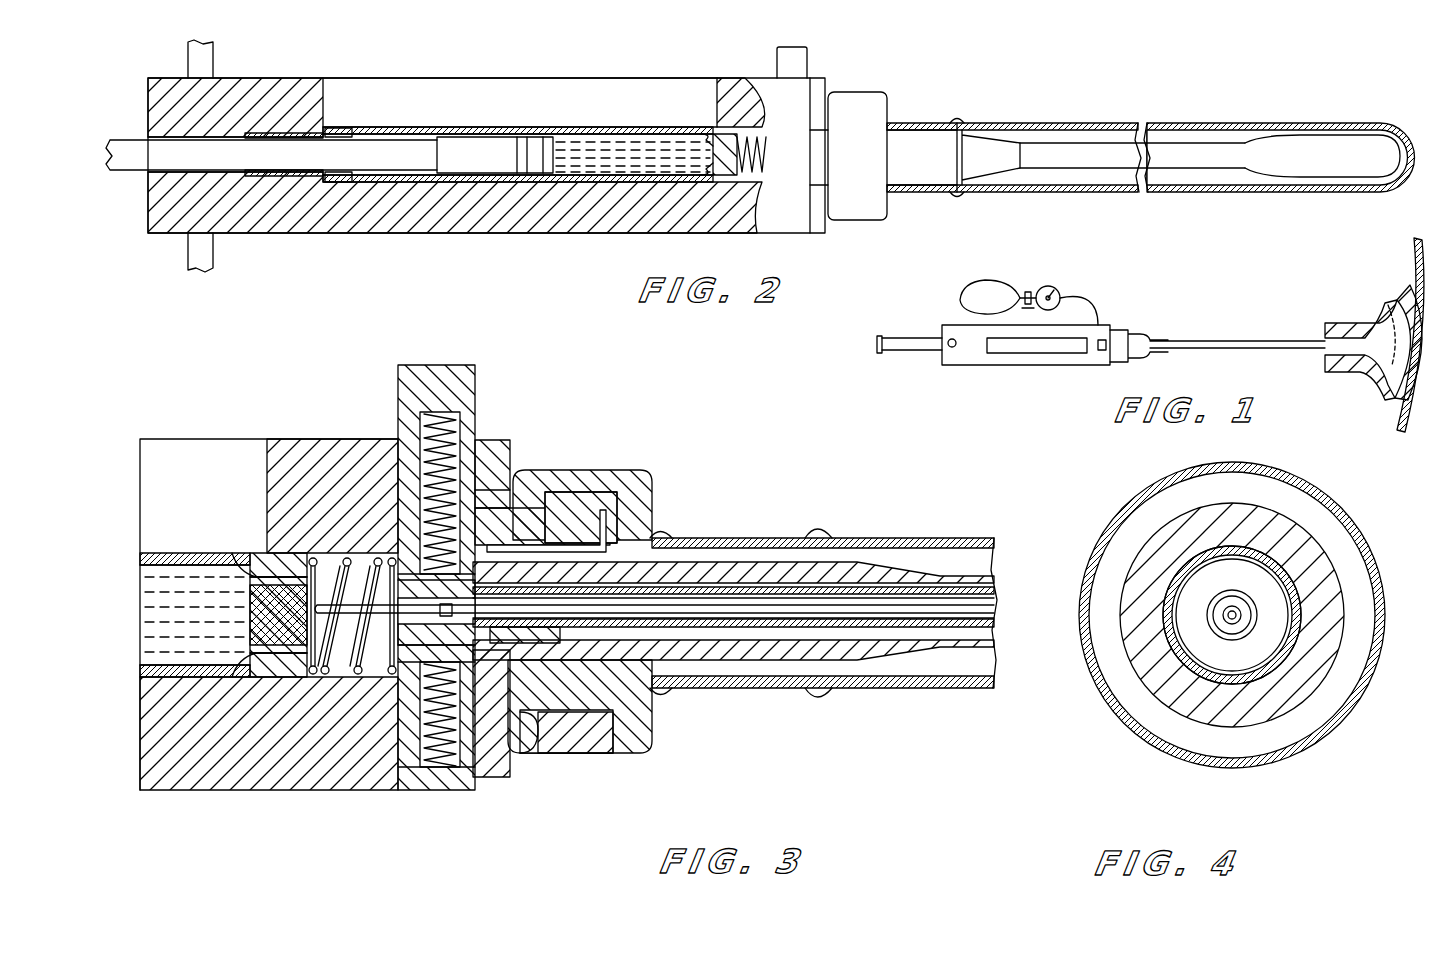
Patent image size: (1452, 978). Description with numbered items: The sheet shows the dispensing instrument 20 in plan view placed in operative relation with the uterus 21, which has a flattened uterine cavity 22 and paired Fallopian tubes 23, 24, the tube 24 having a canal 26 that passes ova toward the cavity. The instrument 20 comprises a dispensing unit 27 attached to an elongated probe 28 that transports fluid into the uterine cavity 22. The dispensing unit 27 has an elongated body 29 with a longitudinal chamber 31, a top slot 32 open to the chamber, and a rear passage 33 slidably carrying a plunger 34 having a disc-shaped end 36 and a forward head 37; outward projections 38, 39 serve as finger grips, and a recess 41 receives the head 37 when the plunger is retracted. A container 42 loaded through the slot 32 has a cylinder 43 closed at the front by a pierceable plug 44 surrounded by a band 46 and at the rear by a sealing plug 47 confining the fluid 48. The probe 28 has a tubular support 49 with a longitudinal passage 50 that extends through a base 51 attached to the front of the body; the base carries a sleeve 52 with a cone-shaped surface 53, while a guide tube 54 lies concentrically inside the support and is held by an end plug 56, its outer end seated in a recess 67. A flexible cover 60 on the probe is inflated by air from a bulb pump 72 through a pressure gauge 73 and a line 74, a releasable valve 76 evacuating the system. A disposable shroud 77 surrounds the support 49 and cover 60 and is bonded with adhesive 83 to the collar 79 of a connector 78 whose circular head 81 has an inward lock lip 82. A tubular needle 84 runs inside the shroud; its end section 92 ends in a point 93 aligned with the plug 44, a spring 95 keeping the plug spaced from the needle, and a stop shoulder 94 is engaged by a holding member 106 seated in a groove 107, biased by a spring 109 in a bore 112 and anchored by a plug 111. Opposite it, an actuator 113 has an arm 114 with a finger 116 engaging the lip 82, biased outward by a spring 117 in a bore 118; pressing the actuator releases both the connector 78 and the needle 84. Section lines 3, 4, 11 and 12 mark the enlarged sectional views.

In FIG. 2, the dispensing instrument 20 is at (905, 60).
In FIG. 1, the dispensing instrument 20 is at (1130, 318).
In FIG. 3, the dispensing instrument 20 is at (300, 420).
In FIG. 1, the uterus 21 is at (1338, 322).
In FIG. 1, the uterine cavity 22 is at (1392, 320).
In FIG. 1, the Fallopian tube 23 is at (1414, 250).
In FIG. 1, the Fallopian tube 24 is at (1405, 285).
In FIG. 1, the canal 26 is at (1392, 395).
In FIG. 1, the dispensing unit 27 is at (1035, 368).
In FIG. 2, the elongated probe 28 is at (1245, 100).
In FIG. 1, the elongated probe 28 is at (1240, 339).
In FIG. 2, the elongated body 29 is at (288, 76).
In FIG. 1, the elongated body 29 is at (958, 334).
In FIG. 3, the elongated body 29 is at (200, 778).
In FIG. 2, the longitudinal chamber 31 is at (345, 130).
In FIG. 3, the longitudinal chamber 31 is at (242, 560).
In FIG. 2, the slot 32 is at (575, 90).
In FIG. 1, the slot 32 is at (1022, 350).
In FIG. 3, the slot 32 is at (175, 450).
In FIG. 2, the longitudinal passage 33 is at (150, 180).
In FIG. 2, the plunger 34 is at (136, 150).
In FIG. 1, the plunger 34 is at (920, 346).
In FIG. 1, the disc-shaped end 36 is at (877, 348).
In FIG. 2, the head 37 is at (470, 148).
In FIG. 2, the projection 38 is at (193, 56).
In FIG. 1, the projection 38 is at (952, 350).
In FIG. 2, the projection 39 is at (193, 252).
In FIG. 2, the recess 41 is at (290, 178).
In FIG. 2, the container 42 is at (622, 125).
In FIG. 3, the container 42 is at (132, 650).
In FIG. 2, the cylinder 43 is at (652, 132).
In FIG. 3, the cylinder 43 is at (175, 552).
In FIG. 2, the plug 44 is at (727, 168).
In FIG. 3, the plug 44 is at (250, 617).
In FIG. 2, the band 46 is at (710, 134).
In FIG. 3, the band 46 is at (258, 558).
In FIG. 2, the sealing plug 47 is at (530, 150).
In FIG. 2, the fluid 48 is at (620, 162).
In FIG. 3, the fluid 48 is at (150, 590).
In FIG. 2, the tubular support 49 is at (1185, 150).
In FIG. 3, the tubular support 49 is at (982, 590).
In FIG. 4, the tubular support 49 is at (1295, 590).
In FIG. 3, the longitudinal passage 50 is at (982, 626).
In FIG. 4, the longitudinal passage 50 is at (1285, 613).
In FIG. 2, the base 51 is at (985, 150).
In FIG. 3, the base 51 is at (600, 686).
In FIG. 3, the sleeve 52 is at (690, 570).
In FIG. 4, the sleeve 52 is at (1325, 560).
In FIG. 3, the cone-shaped surface 53 is at (880, 560).
In FIG. 3, the guide tube 54 is at (982, 600).
In FIG. 4, the guide tube 54 is at (1255, 640).
In FIG. 3, the plug 56 is at (545, 622).
In FIG. 2, the cover 60 is at (1335, 155).
In FIG. 3, the recess 67 is at (548, 592).
In FIG. 1, the bulb pump 72 is at (987, 292).
In FIG. 1, the pressure gauge 73 is at (1053, 288).
In FIG. 1, the line 74 is at (1085, 300).
In FIG. 1, the releasable valve 76 is at (1028, 290).
In FIG. 2, the shroud 77 is at (1095, 121).
In FIG. 3, the shroud 77 is at (978, 538).
In FIG. 4, the shroud 77 is at (1370, 510).
In FIG. 2, the connector 78 is at (858, 90).
In FIG. 3, the connector 78 is at (640, 468).
In FIG. 2, the collar 79 is at (918, 138).
In FIG. 3, the collar 79 is at (742, 540).
In FIG. 3, the circular head 81 is at (573, 758).
In FIG. 3, the lock lip 82 is at (540, 758).
In FIG. 3, the adhesive 83 is at (748, 692).
In FIG. 3, the tubular needle 84 is at (982, 610).
In FIG. 4, the tubular needle 84 is at (1234, 605).
In FIG. 3, the end section 92 is at (350, 634).
In FIG. 3, the point 93 is at (346, 566).
In FIG. 3, the stop shoulder 94 is at (440, 616).
In FIG. 2, the spring 95 is at (752, 150).
In FIG. 3, the spring 95 is at (372, 570).
In FIG. 3, the holding member 106 is at (410, 736).
In FIG. 3, the groove 107 is at (410, 762).
In FIG. 3, the spring 109 is at (458, 772).
In FIG. 3, the plug 111 is at (432, 782).
In FIG. 3, the bore 112 is at (425, 686).
In FIG. 2, the actuator 113 is at (782, 62).
In FIG. 3, the actuator 113 is at (400, 384).
In FIG. 3, the arm 114 is at (495, 505).
In FIG. 3, the finger 116 is at (580, 503).
In FIG. 3, the spring 117 is at (428, 422).
In FIG. 3, the bore 118 is at (462, 432).
In FIG. 1, the section line 3— 3 is at (1175, 352).
In FIG. 3, the section line 4— 4 is at (857, 760).
In FIG. 3, the section line 11— 11 is at (477, 862).
In FIG. 3, the section line 12— 12 is at (398, 862).